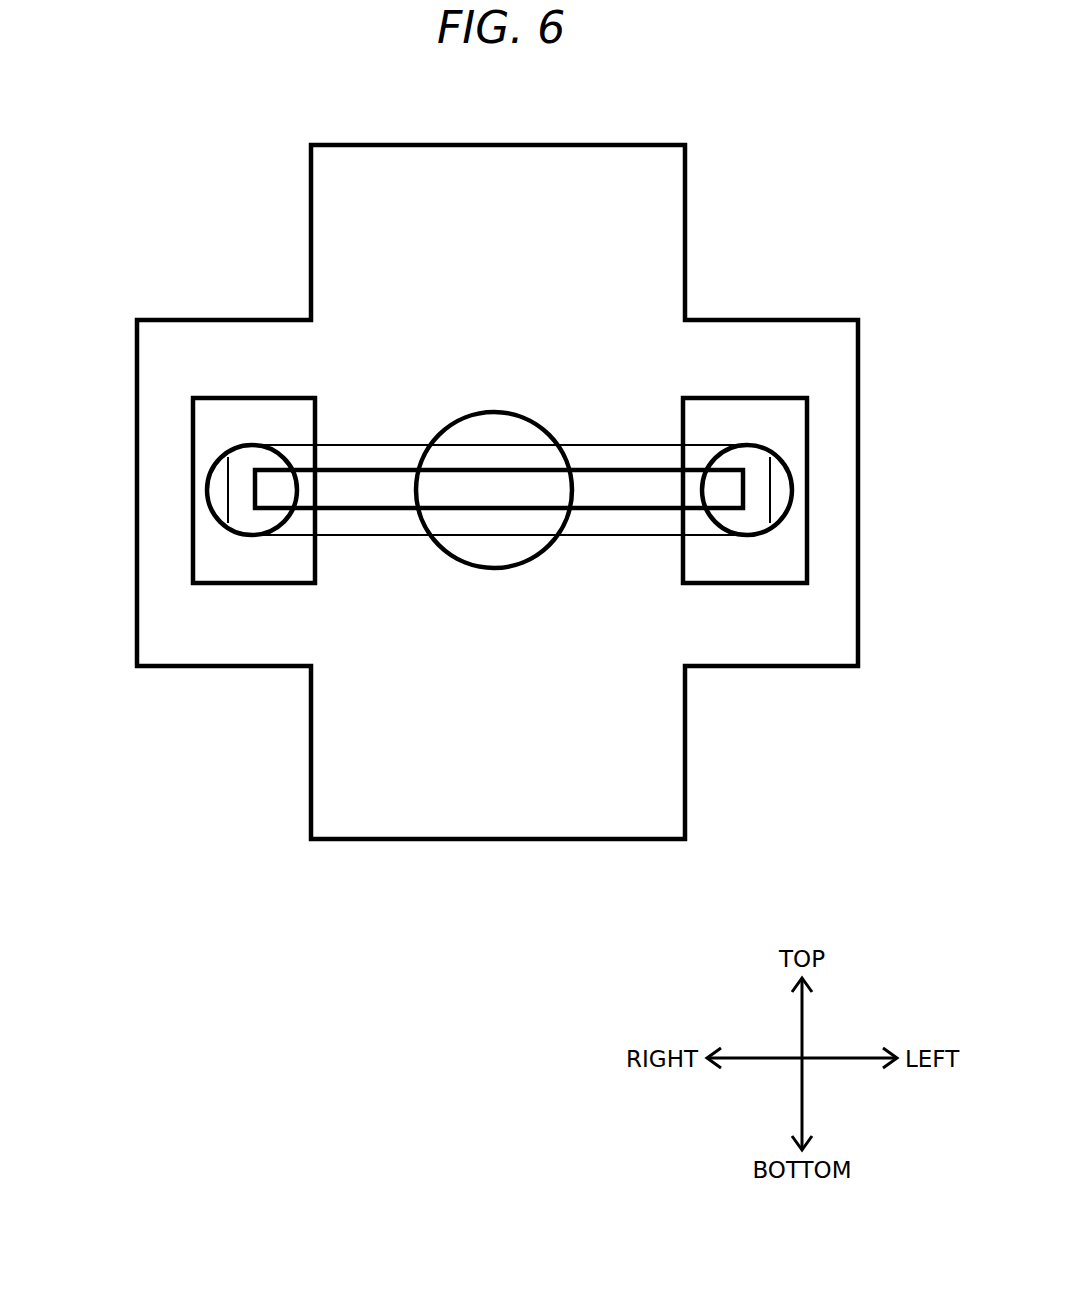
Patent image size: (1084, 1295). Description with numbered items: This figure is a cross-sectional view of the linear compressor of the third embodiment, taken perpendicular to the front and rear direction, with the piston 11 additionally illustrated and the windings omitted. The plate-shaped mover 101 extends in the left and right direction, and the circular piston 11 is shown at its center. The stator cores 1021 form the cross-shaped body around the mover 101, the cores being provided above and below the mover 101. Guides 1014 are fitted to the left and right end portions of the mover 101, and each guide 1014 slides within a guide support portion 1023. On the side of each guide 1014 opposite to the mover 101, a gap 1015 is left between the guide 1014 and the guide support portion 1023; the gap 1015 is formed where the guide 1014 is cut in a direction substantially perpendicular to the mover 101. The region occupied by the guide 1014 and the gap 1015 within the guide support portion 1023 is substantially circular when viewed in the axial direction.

The piston 11 is at (467, 538).
The mover 101 is at (368, 490).
The guide 1014 is at (755, 470).
The gap 1015 is at (218, 493).
The core 1021 is at (580, 798).
The guide support portion 1023 is at (830, 428).